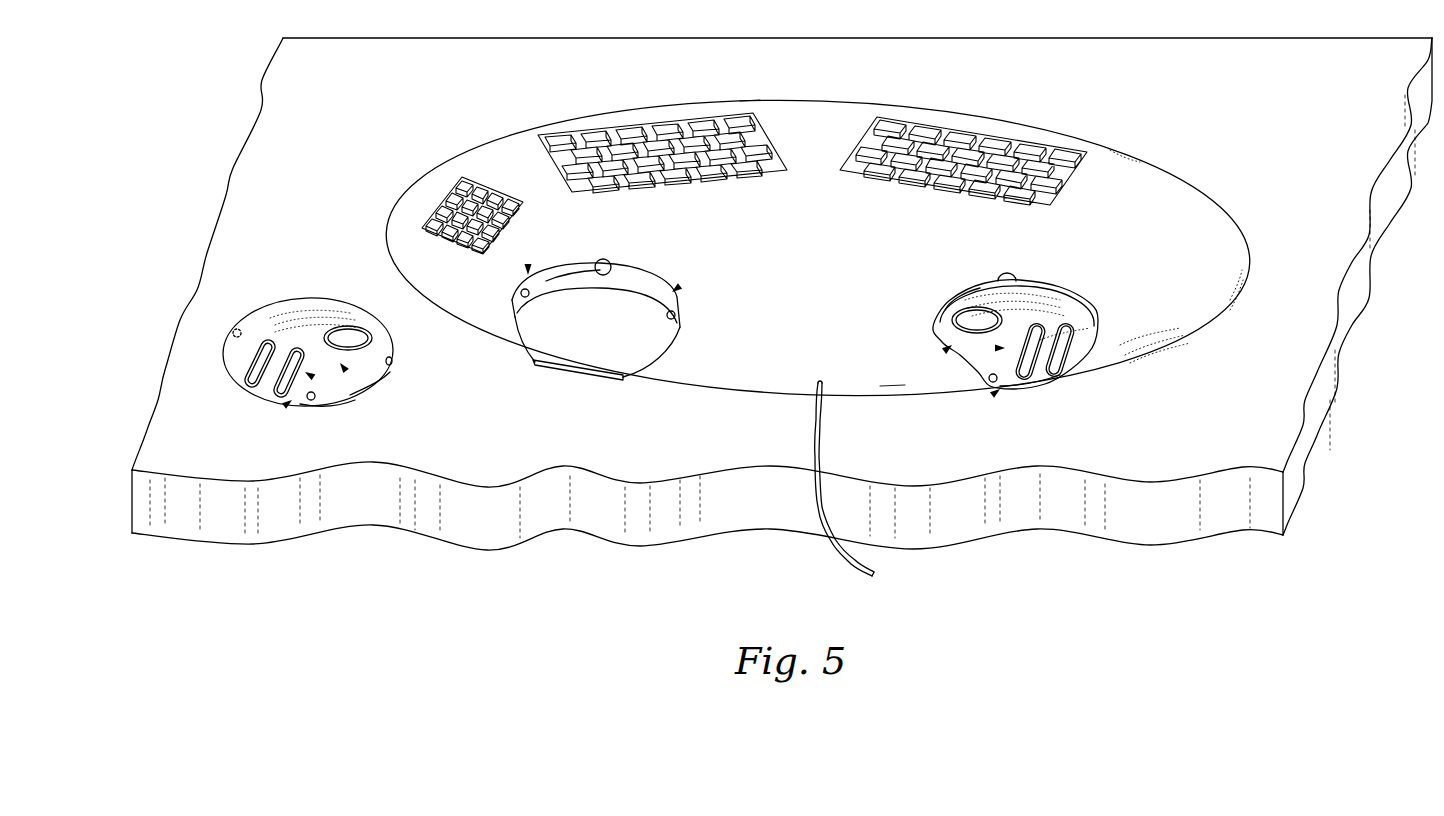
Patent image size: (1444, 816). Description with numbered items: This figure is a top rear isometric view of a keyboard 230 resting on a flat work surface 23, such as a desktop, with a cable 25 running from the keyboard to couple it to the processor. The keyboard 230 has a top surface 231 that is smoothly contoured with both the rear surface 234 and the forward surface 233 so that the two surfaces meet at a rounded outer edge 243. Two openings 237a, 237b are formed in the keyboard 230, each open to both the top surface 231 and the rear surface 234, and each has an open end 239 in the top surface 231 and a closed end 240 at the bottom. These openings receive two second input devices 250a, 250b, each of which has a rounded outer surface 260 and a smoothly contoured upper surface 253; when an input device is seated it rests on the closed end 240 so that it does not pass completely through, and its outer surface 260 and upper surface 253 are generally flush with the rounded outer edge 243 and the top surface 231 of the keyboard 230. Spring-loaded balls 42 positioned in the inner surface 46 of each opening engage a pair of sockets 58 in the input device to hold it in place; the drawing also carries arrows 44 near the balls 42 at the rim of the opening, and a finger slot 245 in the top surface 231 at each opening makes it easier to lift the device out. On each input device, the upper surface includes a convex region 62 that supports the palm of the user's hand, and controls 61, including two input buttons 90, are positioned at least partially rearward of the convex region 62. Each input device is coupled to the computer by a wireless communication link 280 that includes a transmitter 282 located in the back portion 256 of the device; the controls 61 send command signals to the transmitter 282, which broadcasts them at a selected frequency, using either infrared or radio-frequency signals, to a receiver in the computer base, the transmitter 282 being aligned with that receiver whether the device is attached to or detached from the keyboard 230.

The work surface 23 is at (782, 294).
The cable 25 is at (822, 457).
The spring-loaded balls 42 is at (520, 293).
The arrows indicating direction 44 is at (528, 265).
The inner surface 46 is at (547, 285).
The sockets 58 is at (232, 325).
The controls 61 is at (313, 378).
The convex region 62 is at (298, 305).
The input buttons 90 is at (290, 350).
The keyboard 230 is at (1189, 146).
The top surface 231 is at (1112, 155).
The forward surface 233 is at (985, 112).
The rear surface 234 is at (895, 388).
The opening 237a is at (640, 288).
The opening 237b is at (975, 290).
The open end 239 is at (670, 340).
The closed end 240 is at (570, 357).
The rounded outer edge 243 is at (1135, 356).
The finger slot 245 is at (611, 264).
The second input device 250a is at (332, 300).
The second input device 250b is at (1098, 320).
The upper surface 253 is at (375, 350).
The back portion 256 is at (327, 398).
The outer surface 260 is at (365, 388).
The wireless communication link 280 is at (278, 411).
The transmitter 282 is at (308, 400).